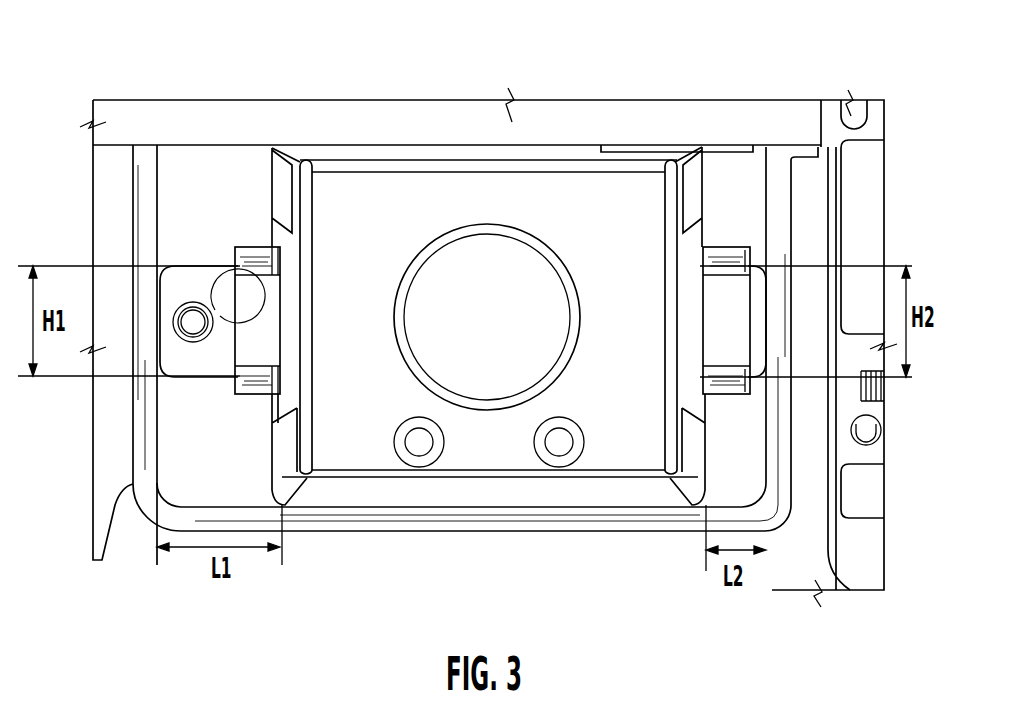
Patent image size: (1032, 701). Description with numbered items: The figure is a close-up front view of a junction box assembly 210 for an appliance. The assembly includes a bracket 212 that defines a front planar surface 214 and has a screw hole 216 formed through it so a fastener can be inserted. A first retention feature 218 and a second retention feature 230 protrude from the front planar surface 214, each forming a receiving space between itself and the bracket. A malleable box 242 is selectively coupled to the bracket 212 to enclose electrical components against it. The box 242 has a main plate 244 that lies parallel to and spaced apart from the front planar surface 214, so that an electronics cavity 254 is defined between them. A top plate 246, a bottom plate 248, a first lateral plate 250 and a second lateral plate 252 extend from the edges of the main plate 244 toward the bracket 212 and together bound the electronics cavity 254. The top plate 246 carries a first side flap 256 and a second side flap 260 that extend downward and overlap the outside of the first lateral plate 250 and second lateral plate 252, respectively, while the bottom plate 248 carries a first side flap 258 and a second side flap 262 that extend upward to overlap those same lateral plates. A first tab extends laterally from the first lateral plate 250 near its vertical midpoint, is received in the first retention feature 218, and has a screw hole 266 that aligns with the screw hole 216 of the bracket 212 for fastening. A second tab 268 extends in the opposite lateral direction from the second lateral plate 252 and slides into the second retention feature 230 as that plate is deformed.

The junction box assembly 210 is at (166, 87).
The bracket 212 is at (147, 180).
The front planar surface 214 is at (197, 177).
The screw hole 216 is at (182, 322).
The first retention feature 218 is at (244, 248).
The second retention feature 230 is at (735, 248).
The box 242 is at (617, 147).
The main plate 244 is at (627, 410).
The top plate 246 is at (436, 150).
The bottom plate 248 is at (482, 492).
The first lateral plate 250 is at (293, 265).
The second lateral plate 252 is at (686, 345).
The electronics cavity 254 is at (503, 418).
The first side flap 256 is at (287, 188).
The first side flap 258 is at (297, 455).
The second side flap 260 is at (690, 185).
The second side flap 262 is at (695, 452).
The screw hole 266 is at (207, 330).
The second tab 268 is at (760, 311).